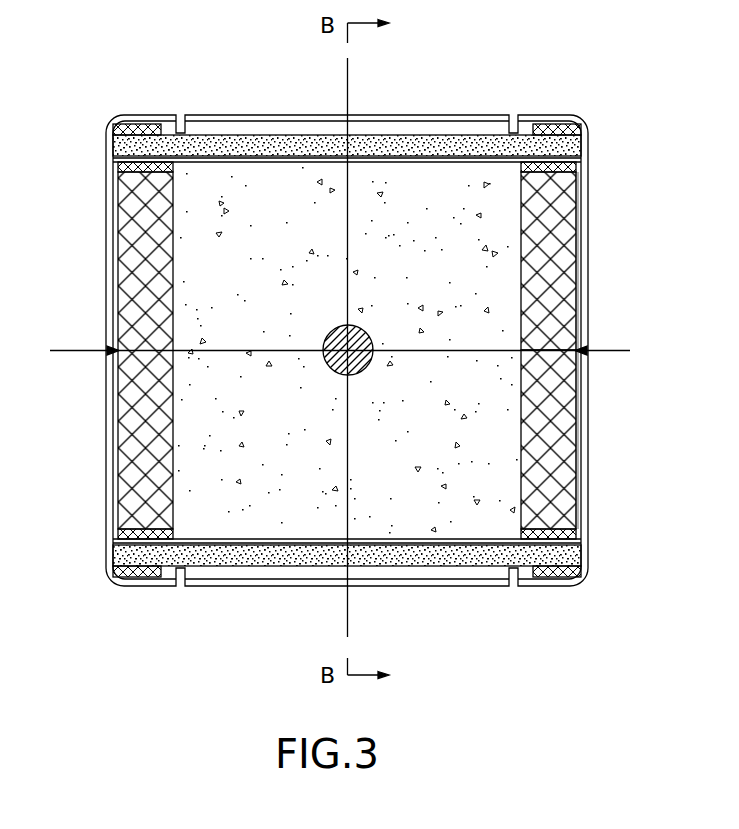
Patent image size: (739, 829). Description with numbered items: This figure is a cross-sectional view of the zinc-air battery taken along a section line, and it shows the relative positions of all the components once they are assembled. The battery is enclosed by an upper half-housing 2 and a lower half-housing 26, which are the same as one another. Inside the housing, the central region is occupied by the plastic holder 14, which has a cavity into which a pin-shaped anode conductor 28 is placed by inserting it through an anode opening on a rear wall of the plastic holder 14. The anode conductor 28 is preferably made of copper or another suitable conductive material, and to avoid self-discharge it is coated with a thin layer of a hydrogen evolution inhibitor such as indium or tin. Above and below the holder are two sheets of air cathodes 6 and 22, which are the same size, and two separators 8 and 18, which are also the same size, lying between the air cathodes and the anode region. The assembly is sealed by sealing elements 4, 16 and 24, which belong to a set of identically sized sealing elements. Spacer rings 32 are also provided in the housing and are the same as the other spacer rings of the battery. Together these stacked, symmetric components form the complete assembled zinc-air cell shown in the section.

The upper half-housing 2 is at (578, 148).
The sealing element 4 is at (533, 160).
The air cathode 6 is at (293, 147).
The separator 8 is at (580, 125).
The plastic holder 14 is at (543, 240).
The sealing element 16 is at (565, 513).
The separator 18 is at (253, 541).
The air cathode 22 is at (388, 545).
The sealing element 24 is at (543, 575).
The lower half-housing 26 is at (577, 455).
The anode conductor 28 is at (325, 345).
The spacer ring 32 is at (520, 115).